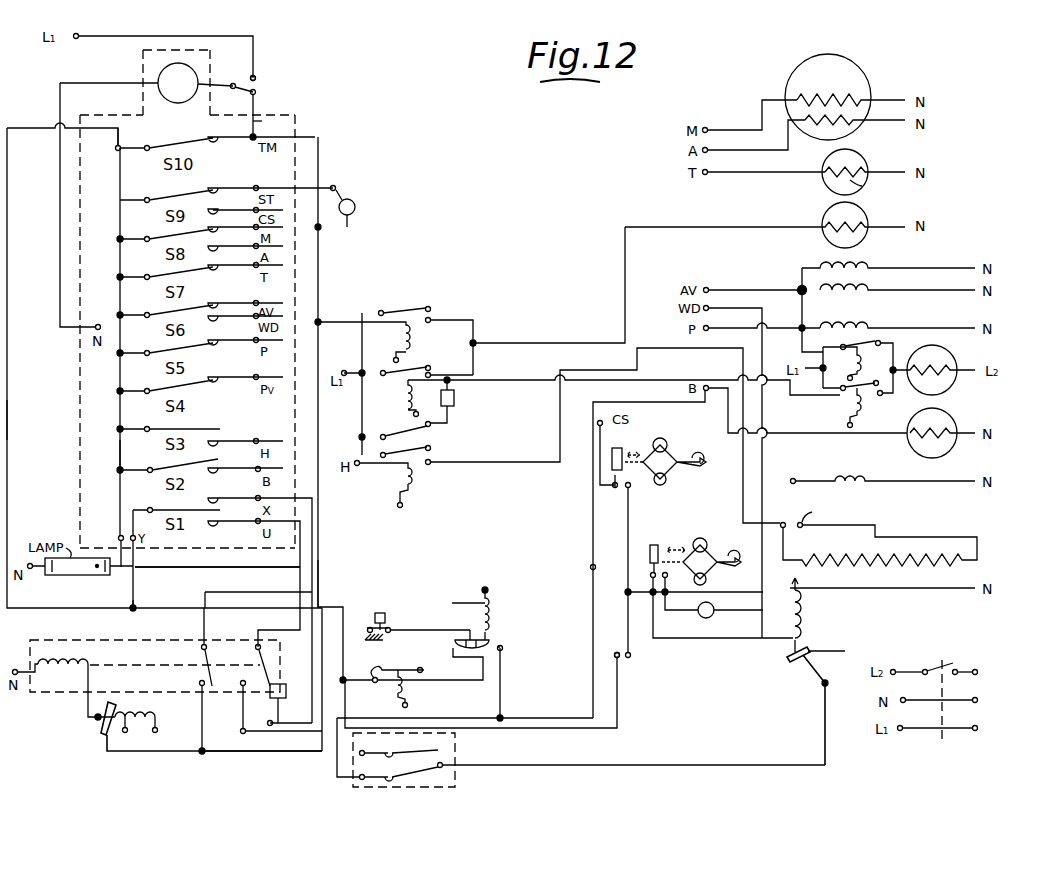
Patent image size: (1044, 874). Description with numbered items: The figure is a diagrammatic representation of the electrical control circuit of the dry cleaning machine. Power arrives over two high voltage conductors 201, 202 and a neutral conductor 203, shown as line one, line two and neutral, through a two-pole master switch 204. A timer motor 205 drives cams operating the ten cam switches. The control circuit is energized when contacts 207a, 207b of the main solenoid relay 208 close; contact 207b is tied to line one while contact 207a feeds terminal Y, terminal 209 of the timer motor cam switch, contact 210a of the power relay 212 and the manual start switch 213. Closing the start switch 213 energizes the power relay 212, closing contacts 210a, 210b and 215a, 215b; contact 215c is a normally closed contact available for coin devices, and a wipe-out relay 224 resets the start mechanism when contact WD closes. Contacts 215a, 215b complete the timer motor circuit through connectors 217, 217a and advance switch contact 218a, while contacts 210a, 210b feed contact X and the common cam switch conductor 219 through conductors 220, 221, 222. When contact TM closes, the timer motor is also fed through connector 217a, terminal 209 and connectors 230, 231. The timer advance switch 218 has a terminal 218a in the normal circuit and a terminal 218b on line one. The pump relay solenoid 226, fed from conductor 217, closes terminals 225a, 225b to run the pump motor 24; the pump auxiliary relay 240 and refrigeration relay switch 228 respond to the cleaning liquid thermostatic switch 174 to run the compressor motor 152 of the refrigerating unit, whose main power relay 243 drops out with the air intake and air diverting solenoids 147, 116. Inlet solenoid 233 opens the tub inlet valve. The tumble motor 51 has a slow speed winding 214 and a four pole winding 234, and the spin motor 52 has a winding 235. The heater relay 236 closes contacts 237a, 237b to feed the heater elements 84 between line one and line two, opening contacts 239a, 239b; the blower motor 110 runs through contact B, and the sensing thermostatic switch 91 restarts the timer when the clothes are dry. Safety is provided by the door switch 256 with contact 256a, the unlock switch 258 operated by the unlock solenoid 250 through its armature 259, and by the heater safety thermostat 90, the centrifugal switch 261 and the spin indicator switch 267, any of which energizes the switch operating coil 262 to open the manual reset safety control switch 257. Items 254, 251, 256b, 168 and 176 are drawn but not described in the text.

The timer motor 205 is at (158, 73).
The timer advance switch 218 is at (234, 82).
The timer advance switch terminal 218a is at (257, 93).
The timer advance switch terminal 218b is at (257, 76).
The conductor 217a is at (262, 121).
The timer motor cam switch terminal 209 is at (120, 150).
The sensing thermostatic switch 91 is at (357, 207).
The conductor 230 is at (10, 420).
The common timer cam switch conductor 219 is at (120, 456).
The conductor 222 is at (196, 568).
The conductor 221 is at (217, 594).
The timer motor conductor 217 is at (320, 590).
The conductor 231 is at (138, 612).
The power relay 212 is at (70, 658).
The power relay switch contact 210b is at (202, 648).
The power relay switch contact 210a is at (200, 683).
The power relay contact 215b is at (262, 646).
The power relay normally closed switch contact 215c is at (290, 705).
The power relay contact 215a is at (242, 686).
The wipe-out relay 224 is at (150, 712).
The manual start switch 213 is at (100, 732).
The conductor 220 is at (252, 762).
The pump relay switch terminal 225b is at (432, 305).
The pump relay switch terminal 225a is at (433, 316).
The pump relay solenoid 226 is at (412, 340).
The pump auxiliary relay 240 is at (406, 408).
The cleaning liquid thermostatic switch 174 is at (457, 401).
The heater relay normally closed switch contact 239a is at (410, 435).
The heater relay normally closed switch contact 239b is at (432, 426).
The heater relay switch contact 237b is at (432, 449).
The heater relay switch contact 237a is at (430, 466).
The heater relay 236 is at (414, 488).
The switch 254 is at (410, 598).
The conductor 251 is at (494, 572).
The unlock switch 258 is at (449, 633).
The unlock solenoid 250 is at (490, 614).
The unlock solenoid armature 259 is at (486, 642).
The main relay contact 207b is at (402, 645).
The main relay contact 207a is at (380, 686).
The main solenoid relay 208 is at (410, 690).
The door switch contact 256a is at (440, 750).
The conductor 256b is at (357, 778).
The door switch 256 is at (456, 782).
The clothes tumble motor 51 is at (870, 76).
The slow speed winding 214 is at (802, 87).
The four pole winding 234 is at (836, 131).
The spin motor 52 is at (832, 158).
The spin motor winding 235 is at (864, 184).
The liquid circulating pump motor 24 is at (828, 218).
The air intake solenoid 147 is at (872, 262).
The air diverting valve solenoid 116 is at (872, 286).
The inlet solenoid 233 is at (872, 322).
The main power relay of the refrigerating unit 243 is at (880, 344).
The refrigerating unit compressor motor 152 is at (948, 361).
The refrigeration relay switch 228 is at (880, 395).
The blower motor 110 is at (946, 416).
The solenoid 168 is at (850, 480).
The heater elements 84 is at (874, 561).
The switch operating coil 262 is at (812, 612).
The spin indicator centrifugal switch 267 is at (632, 446).
The centrifugal switch 261 is at (658, 545).
The lamp 176 is at (712, 617).
The heater safety thermostat 90 is at (632, 656).
The safety control switch 257 is at (802, 674).
The master switch 204 is at (938, 660).
The high voltage conductor 201 is at (959, 670).
The neutral conductor 203 is at (956, 698).
The high voltage conductor 202 is at (956, 730).